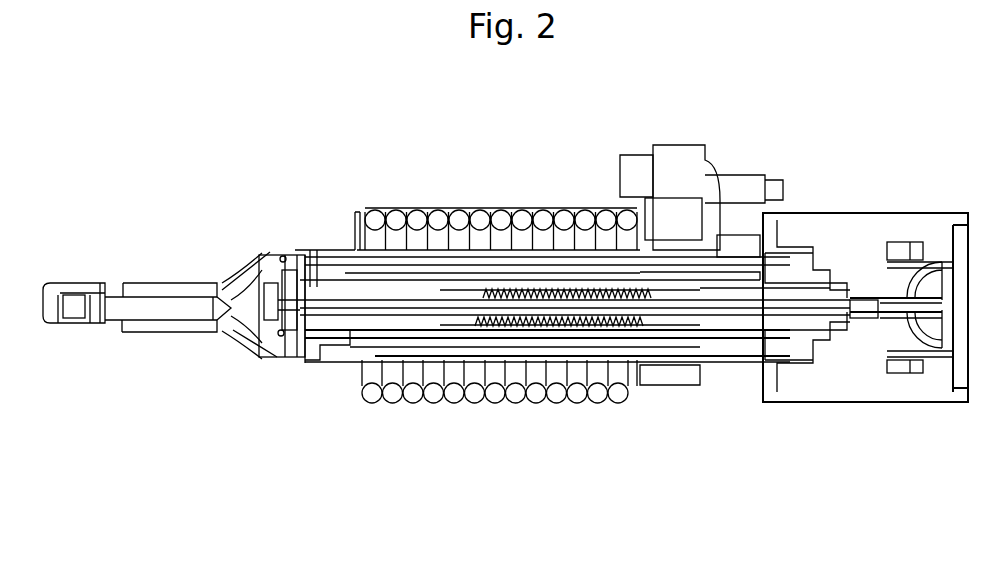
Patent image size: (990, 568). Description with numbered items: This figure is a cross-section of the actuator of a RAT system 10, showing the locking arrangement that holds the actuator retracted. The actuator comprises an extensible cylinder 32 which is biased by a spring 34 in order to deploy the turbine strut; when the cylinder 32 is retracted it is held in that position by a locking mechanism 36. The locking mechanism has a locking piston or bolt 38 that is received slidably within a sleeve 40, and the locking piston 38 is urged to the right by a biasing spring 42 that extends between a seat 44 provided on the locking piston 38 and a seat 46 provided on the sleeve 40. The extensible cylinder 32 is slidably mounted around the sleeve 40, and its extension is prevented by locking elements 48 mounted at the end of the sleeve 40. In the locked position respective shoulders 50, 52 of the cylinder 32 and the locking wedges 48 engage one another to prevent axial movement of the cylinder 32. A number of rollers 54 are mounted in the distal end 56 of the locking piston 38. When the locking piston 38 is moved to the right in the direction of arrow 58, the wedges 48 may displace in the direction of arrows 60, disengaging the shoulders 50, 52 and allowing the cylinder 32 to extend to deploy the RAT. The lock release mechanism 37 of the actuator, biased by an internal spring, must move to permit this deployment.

The RAT system 10 is at (528, 150).
The cylinder 32 is at (353, 250).
The spring 34 is at (418, 208).
The locking mechanism 36 is at (969, 428).
The lock release mechanism 37 is at (867, 318).
The locking piston 38 is at (735, 268).
The sleeve 40 is at (441, 270).
The biasing spring 42 is at (577, 340).
The seat 44 is at (670, 384).
The seat 46 is at (468, 290).
The locking elements 48 is at (293, 267).
The shoulder 50 is at (340, 370).
The shoulder 52 is at (300, 372).
The rollers 54 is at (266, 258).
The distal end 56 is at (312, 285).
The arrow 58 is at (425, 477).
The arrows 60 is at (296, 104).